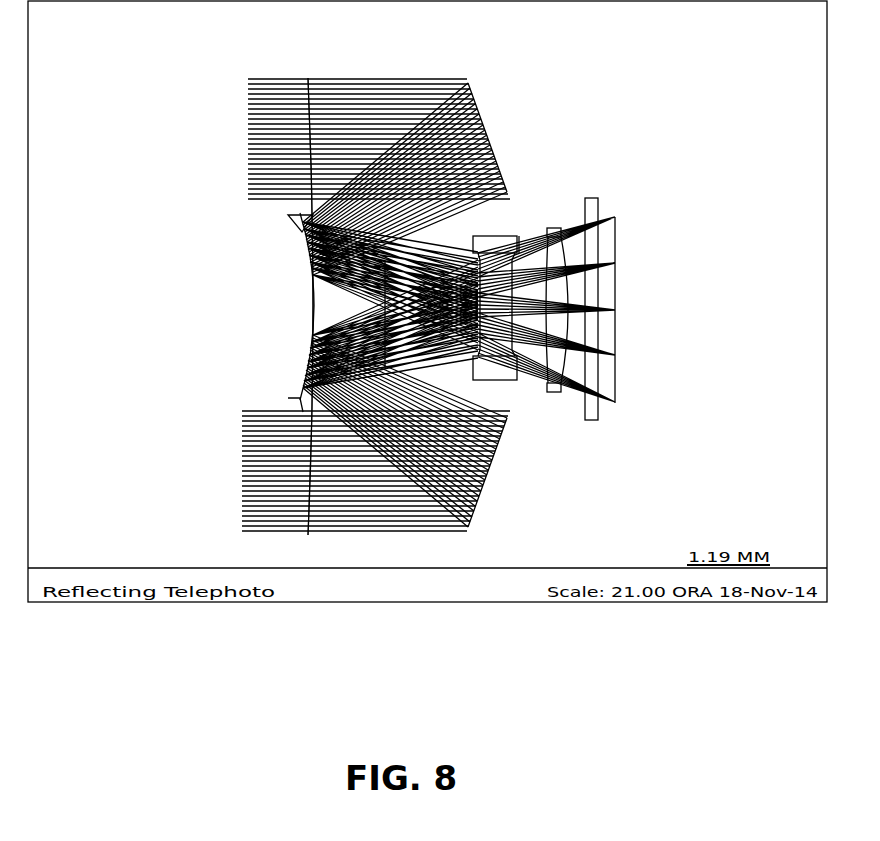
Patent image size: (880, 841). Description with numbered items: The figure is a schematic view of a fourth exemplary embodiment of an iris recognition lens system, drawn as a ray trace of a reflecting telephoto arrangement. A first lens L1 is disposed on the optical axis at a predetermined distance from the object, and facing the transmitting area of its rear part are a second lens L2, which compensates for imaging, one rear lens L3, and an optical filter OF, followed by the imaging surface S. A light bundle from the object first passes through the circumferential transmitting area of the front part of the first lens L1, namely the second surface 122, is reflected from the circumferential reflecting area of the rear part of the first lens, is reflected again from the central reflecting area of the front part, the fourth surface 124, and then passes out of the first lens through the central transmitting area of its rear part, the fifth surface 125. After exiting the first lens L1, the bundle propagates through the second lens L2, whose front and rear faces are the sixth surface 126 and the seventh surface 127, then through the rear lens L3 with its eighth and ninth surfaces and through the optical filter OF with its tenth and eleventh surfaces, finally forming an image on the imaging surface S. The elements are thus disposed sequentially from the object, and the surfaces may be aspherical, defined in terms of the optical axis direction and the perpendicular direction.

The second surface 122 is at (305, 118).
The fourth surface 124 is at (297, 220).
The fifth surface 125 is at (378, 303).
The sixth surface 126 is at (460, 235).
The seventh surface 127 is at (520, 242).
The first lens L1 is at (300, 385).
The second lens L2 is at (492, 384).
The rear lens L3 is at (553, 392).
The optical filter OF is at (594, 422).
The imaging surface S is at (608, 233).